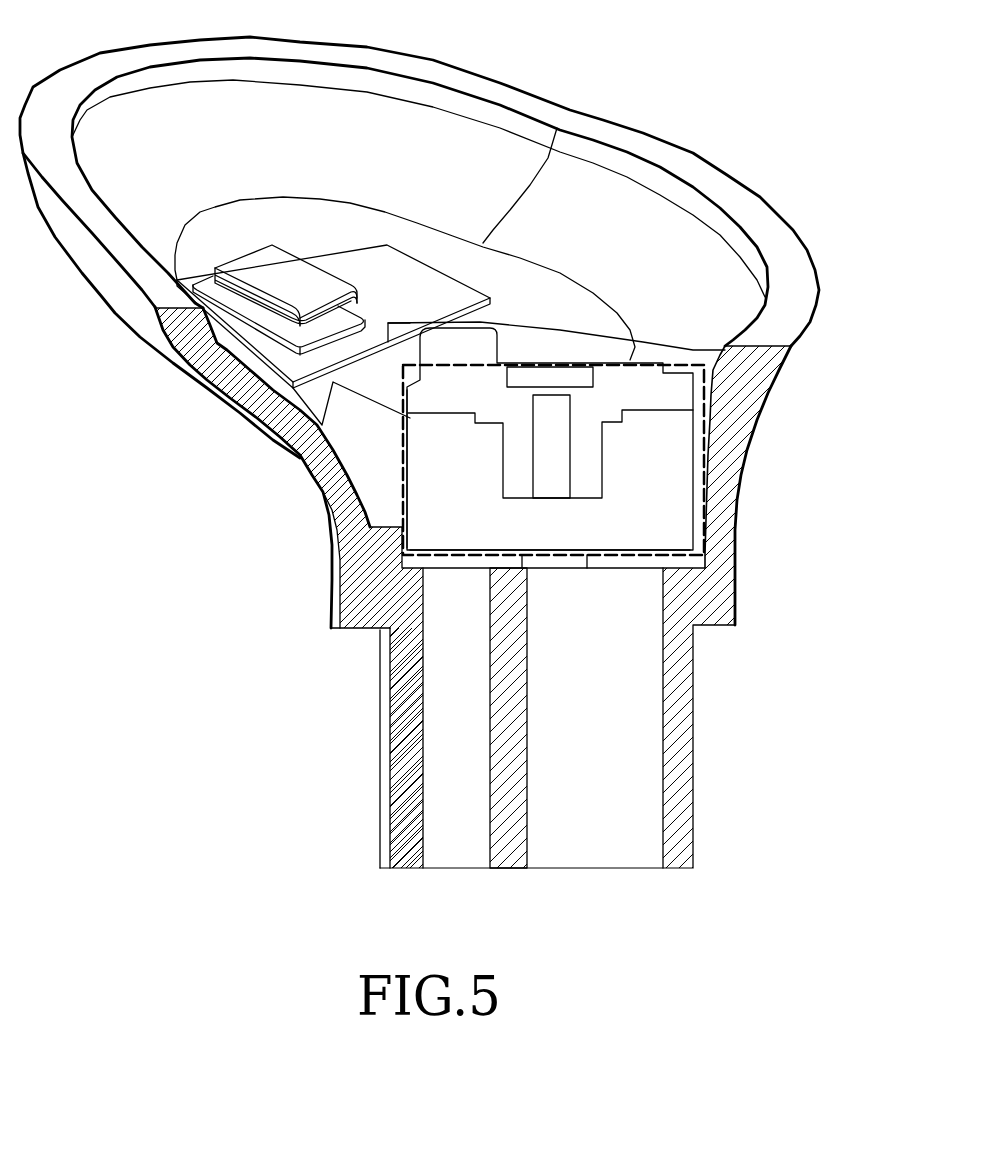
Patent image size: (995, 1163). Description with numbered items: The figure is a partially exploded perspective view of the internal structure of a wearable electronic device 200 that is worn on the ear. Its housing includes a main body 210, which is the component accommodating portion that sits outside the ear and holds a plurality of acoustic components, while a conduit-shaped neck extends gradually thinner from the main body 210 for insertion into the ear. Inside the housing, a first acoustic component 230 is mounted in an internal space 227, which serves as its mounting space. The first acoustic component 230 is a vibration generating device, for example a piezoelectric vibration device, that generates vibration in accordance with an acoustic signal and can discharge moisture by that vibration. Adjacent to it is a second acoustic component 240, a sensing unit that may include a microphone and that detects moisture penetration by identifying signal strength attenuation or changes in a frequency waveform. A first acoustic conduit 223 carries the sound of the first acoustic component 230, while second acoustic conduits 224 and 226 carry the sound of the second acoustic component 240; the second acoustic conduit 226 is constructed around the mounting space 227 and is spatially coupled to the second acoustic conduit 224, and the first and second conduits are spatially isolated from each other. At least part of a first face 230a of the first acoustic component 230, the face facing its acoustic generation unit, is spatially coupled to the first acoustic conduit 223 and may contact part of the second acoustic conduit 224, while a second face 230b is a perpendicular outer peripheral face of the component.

The wearable electronic device 200 is at (448, 452).
The main body 210 is at (595, 127).
The first acoustic conduit 223 is at (617, 715).
The second acoustic conduit 224 is at (450, 763).
The second acoustic conduit 226 is at (327, 483).
The internal space 227 is at (705, 463).
The first acoustic component 230 is at (539, 472).
The first face 230a is at (620, 573).
The second face 230b is at (403, 507).
The second acoustic component 240 is at (272, 262).